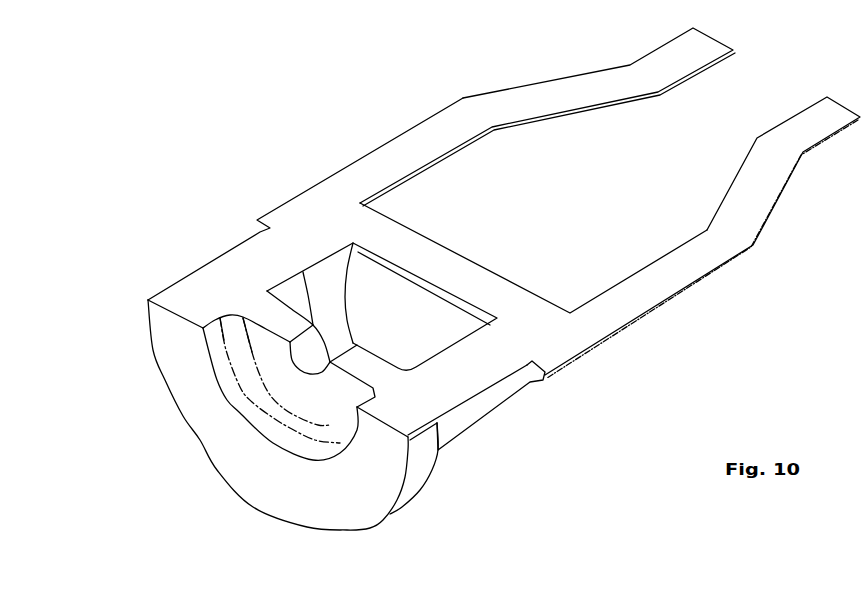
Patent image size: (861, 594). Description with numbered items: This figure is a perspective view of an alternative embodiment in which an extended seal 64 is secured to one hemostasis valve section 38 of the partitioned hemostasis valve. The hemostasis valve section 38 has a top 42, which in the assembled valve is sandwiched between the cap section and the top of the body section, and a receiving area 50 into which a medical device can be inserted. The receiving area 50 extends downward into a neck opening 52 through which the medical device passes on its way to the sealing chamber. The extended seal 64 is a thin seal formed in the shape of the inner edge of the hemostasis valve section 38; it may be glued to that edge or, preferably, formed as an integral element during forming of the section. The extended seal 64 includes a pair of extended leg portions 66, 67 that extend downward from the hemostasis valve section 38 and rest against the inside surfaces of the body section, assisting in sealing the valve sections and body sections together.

The hemostasis valve section 38 is at (437, 522).
The top 42 is at (253, 487).
The receiving area 50 is at (272, 378).
The neck opening 52 is at (315, 353).
The extended seal 64 is at (458, 383).
The extended leg portion 66 is at (725, 247).
The extended leg portion 67 is at (448, 128).